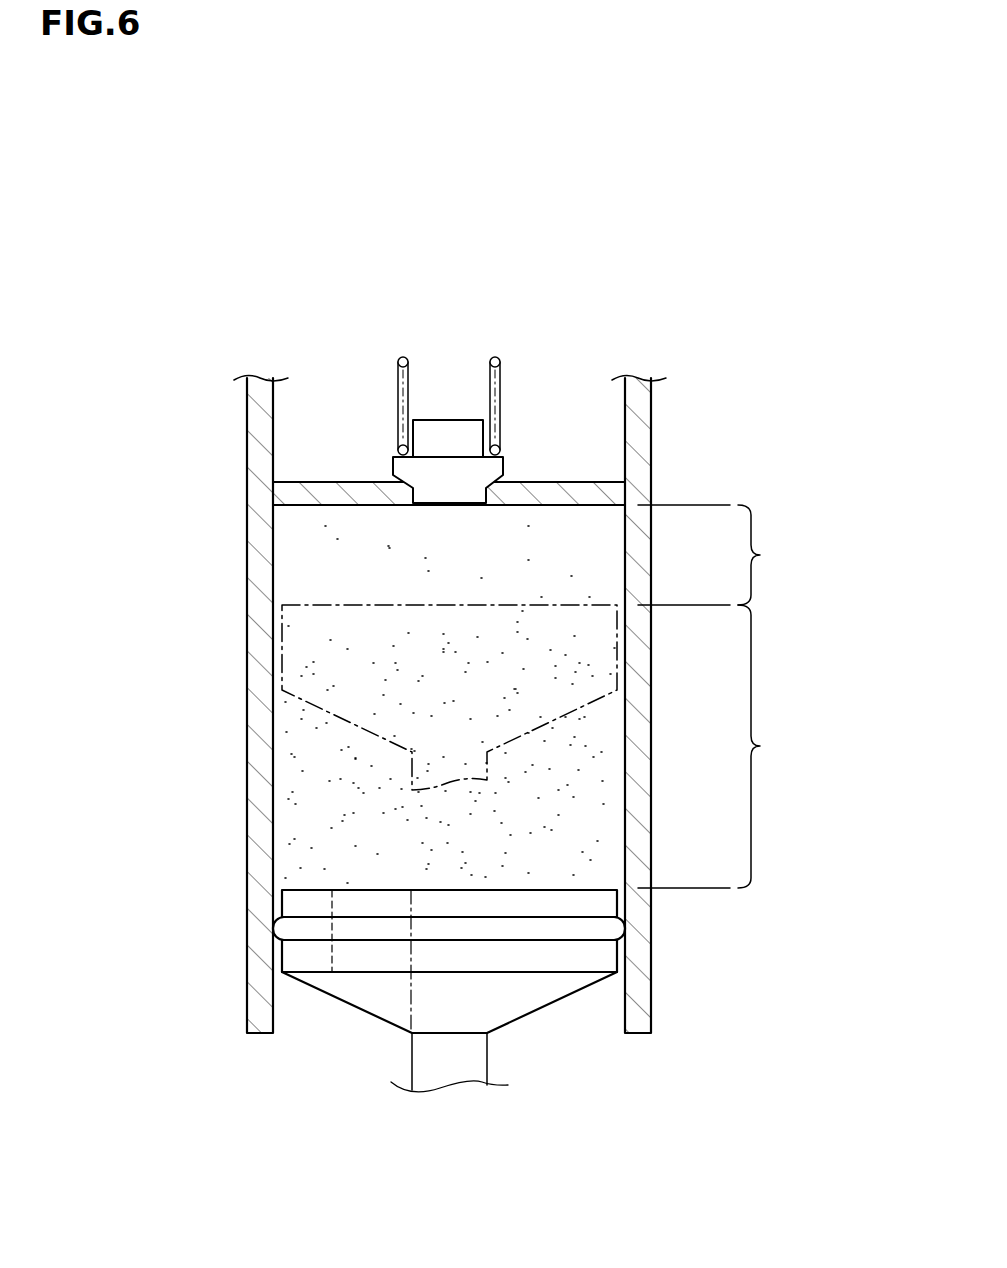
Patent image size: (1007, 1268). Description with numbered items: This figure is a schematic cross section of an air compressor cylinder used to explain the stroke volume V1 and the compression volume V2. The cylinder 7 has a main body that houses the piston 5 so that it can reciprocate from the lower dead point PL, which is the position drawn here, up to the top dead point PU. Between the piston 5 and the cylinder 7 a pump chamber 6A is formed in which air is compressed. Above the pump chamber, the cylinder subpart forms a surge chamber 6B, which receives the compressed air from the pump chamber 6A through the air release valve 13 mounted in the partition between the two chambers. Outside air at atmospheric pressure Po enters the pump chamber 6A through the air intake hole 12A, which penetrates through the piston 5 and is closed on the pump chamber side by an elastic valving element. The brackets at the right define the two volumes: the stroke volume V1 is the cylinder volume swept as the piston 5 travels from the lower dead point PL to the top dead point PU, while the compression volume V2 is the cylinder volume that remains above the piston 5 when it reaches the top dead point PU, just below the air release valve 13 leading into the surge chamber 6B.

The air release valve 13 is at (548, 365).
The surge chamber 6B is at (313, 438).
The pump chamber 6A is at (300, 551).
The top dead point PU is at (305, 600).
The cylinder 7 is at (260, 781).
The lower dead point PL is at (318, 888).
The air intake hole 12A is at (336, 963).
The piston 5 is at (508, 1000).
The stroke volume V1 is at (725, 746).
The compression volume V2 is at (725, 555).
The atmospheric pressure Po is at (362, 1082).